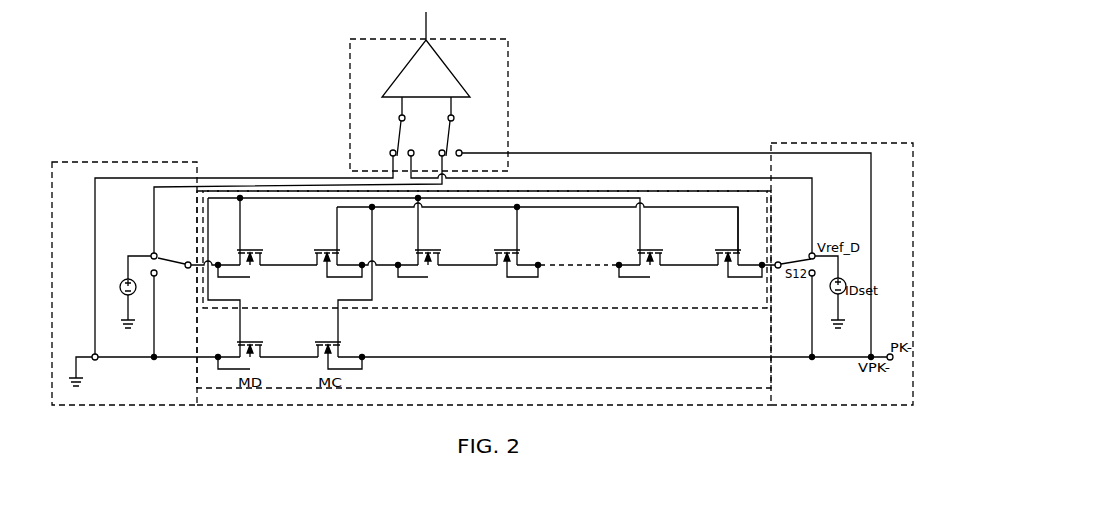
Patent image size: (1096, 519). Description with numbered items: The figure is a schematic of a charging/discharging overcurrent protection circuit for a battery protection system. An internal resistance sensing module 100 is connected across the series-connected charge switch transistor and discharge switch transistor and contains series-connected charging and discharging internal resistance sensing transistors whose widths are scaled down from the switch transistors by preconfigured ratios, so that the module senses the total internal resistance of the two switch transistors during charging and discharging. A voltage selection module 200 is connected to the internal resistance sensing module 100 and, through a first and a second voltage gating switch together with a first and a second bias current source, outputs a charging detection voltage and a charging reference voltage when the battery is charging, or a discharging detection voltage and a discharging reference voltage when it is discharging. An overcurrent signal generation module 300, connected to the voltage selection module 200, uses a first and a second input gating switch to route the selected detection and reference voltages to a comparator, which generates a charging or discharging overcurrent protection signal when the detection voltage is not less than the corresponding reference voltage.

The internal resistance sensing module 100 is at (605, 191).
The voltage selection module 200 is at (123, 166).
The overcurrent signal generation module 300 is at (492, 42).